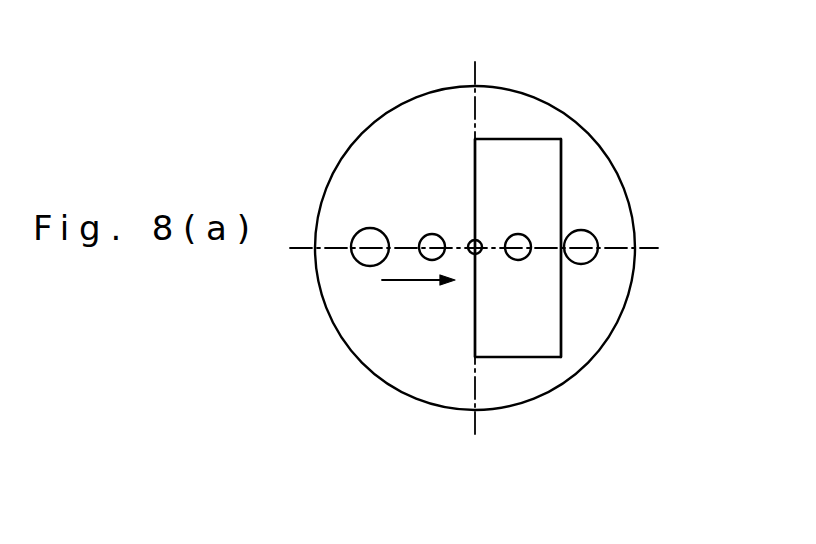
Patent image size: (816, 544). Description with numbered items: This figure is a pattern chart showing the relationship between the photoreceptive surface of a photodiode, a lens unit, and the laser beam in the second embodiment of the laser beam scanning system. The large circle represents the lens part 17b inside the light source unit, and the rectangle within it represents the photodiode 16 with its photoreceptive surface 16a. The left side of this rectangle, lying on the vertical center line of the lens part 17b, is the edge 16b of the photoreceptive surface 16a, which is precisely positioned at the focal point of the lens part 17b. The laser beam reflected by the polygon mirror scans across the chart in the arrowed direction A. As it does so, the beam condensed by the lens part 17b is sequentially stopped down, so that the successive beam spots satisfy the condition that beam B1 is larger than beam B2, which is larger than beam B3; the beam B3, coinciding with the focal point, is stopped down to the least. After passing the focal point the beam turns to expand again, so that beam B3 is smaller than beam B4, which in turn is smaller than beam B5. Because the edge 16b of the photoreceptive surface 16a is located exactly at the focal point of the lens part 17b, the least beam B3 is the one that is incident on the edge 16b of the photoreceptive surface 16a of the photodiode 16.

The lens part 17b is at (538, 98).
The photodiode 16 is at (565, 155).
The photoreceptive surface 16a is at (553, 181).
The edge of the photoreceptive surface 16b is at (475, 320).
The beam B1 is at (372, 229).
The beam B2 is at (432, 234).
The beam B3 is at (478, 240).
The beam B4 is at (518, 261).
The beam B5 is at (581, 265).
The arrowed direction A is at (395, 300).